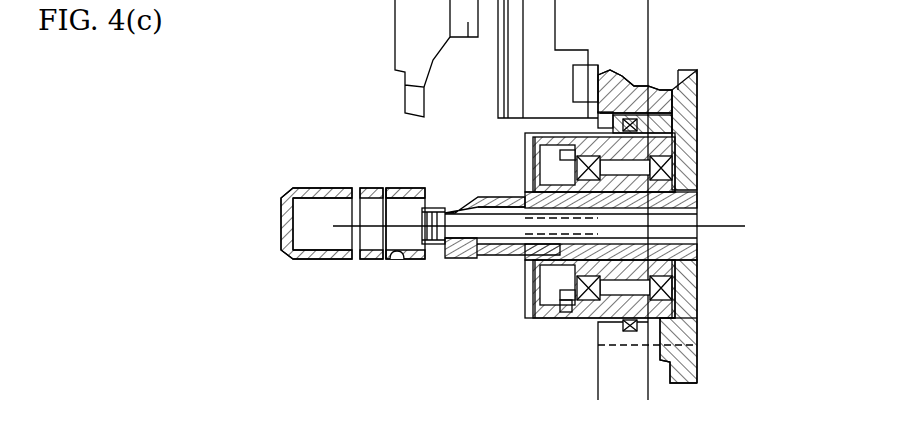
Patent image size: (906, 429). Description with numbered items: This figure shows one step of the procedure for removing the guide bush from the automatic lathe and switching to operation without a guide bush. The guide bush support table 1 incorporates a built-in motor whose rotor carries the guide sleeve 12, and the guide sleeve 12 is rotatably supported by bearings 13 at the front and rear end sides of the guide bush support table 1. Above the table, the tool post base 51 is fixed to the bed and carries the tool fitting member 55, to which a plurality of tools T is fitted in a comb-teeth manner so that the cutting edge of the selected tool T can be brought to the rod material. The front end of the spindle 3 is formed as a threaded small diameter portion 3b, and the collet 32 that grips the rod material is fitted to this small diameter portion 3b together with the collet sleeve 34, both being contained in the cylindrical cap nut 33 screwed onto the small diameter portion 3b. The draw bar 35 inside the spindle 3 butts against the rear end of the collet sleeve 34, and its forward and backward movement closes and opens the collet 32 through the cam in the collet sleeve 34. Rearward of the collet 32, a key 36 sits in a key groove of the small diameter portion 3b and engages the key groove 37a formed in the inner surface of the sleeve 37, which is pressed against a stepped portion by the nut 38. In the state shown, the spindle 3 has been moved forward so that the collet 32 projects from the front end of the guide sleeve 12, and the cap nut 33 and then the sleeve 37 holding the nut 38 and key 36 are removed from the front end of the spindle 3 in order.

The tool T is at (395, 86).
The tool fitting member 55 is at (456, 42).
The tool post base 51 is at (640, 24).
The guide bush support table 1 is at (700, 74).
The spindle 3 is at (697, 192).
The draw bar 35 is at (700, 207).
The guide sleeve 12 is at (700, 268).
The bearing 13 is at (597, 305).
The cap nut 33 is at (282, 248).
The nut 38 is at (366, 262).
The sleeve 37 is at (402, 187).
The key groove 37a is at (393, 261).
The collet sleeve 34 is at (451, 206).
The collet 32 is at (434, 250).
The small diameter portion 3b is at (497, 196).
The key 36 is at (512, 258).